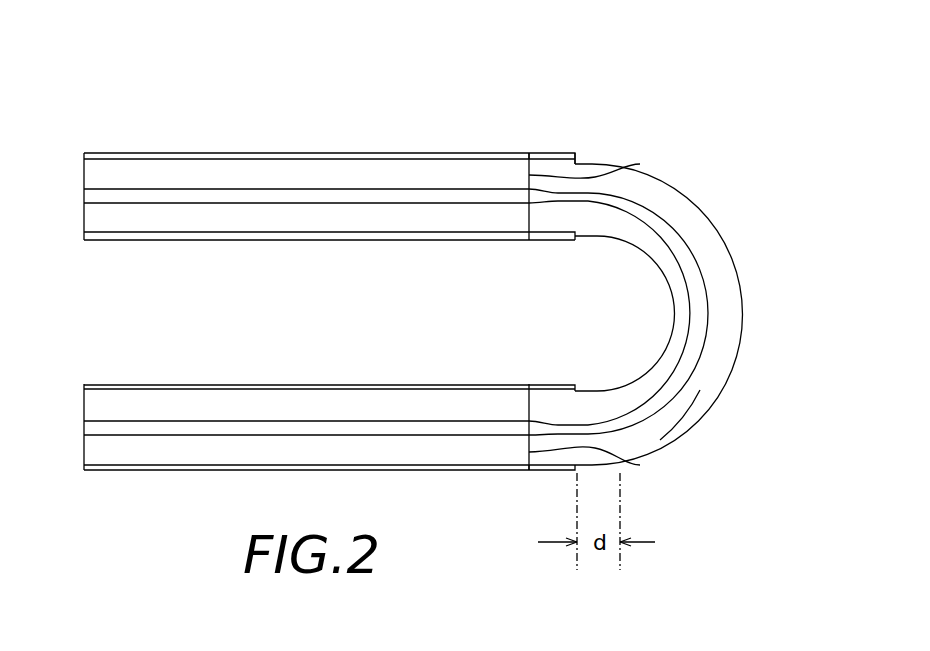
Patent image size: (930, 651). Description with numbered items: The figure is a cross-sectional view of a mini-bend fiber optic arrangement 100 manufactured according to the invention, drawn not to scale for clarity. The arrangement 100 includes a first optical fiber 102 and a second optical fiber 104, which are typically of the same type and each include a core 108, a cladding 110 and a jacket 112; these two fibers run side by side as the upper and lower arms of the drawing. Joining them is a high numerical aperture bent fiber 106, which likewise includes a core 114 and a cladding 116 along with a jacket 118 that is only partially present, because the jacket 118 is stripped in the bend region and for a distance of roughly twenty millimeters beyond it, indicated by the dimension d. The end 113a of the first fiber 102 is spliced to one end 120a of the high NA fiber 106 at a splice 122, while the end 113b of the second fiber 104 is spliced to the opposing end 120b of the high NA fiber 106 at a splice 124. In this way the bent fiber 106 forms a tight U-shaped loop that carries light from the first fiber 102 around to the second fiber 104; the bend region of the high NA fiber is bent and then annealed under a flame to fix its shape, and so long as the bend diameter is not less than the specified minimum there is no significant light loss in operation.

The mini-bend fiber optic arrangement 100 is at (640, 114).
The first optical fiber 102 is at (139, 153).
The second optical fiber 104 is at (198, 470).
The high numerical aperture bent fiber 106 is at (733, 262).
The core 108 is at (383, 420).
The cladding 110 is at (290, 240).
The jacket 112 is at (197, 240).
The end of first fiber 113a is at (512, 240).
The end of second fiber 113b is at (518, 384).
The core 114 is at (705, 357).
The cladding 116 is at (708, 410).
The jacket 118 is at (575, 153).
The end of high NA fiber 120a is at (551, 153).
The opposing end of high NA fiber 120b is at (522, 470).
The splice 122 is at (625, 164).
The splice 124 is at (637, 466).